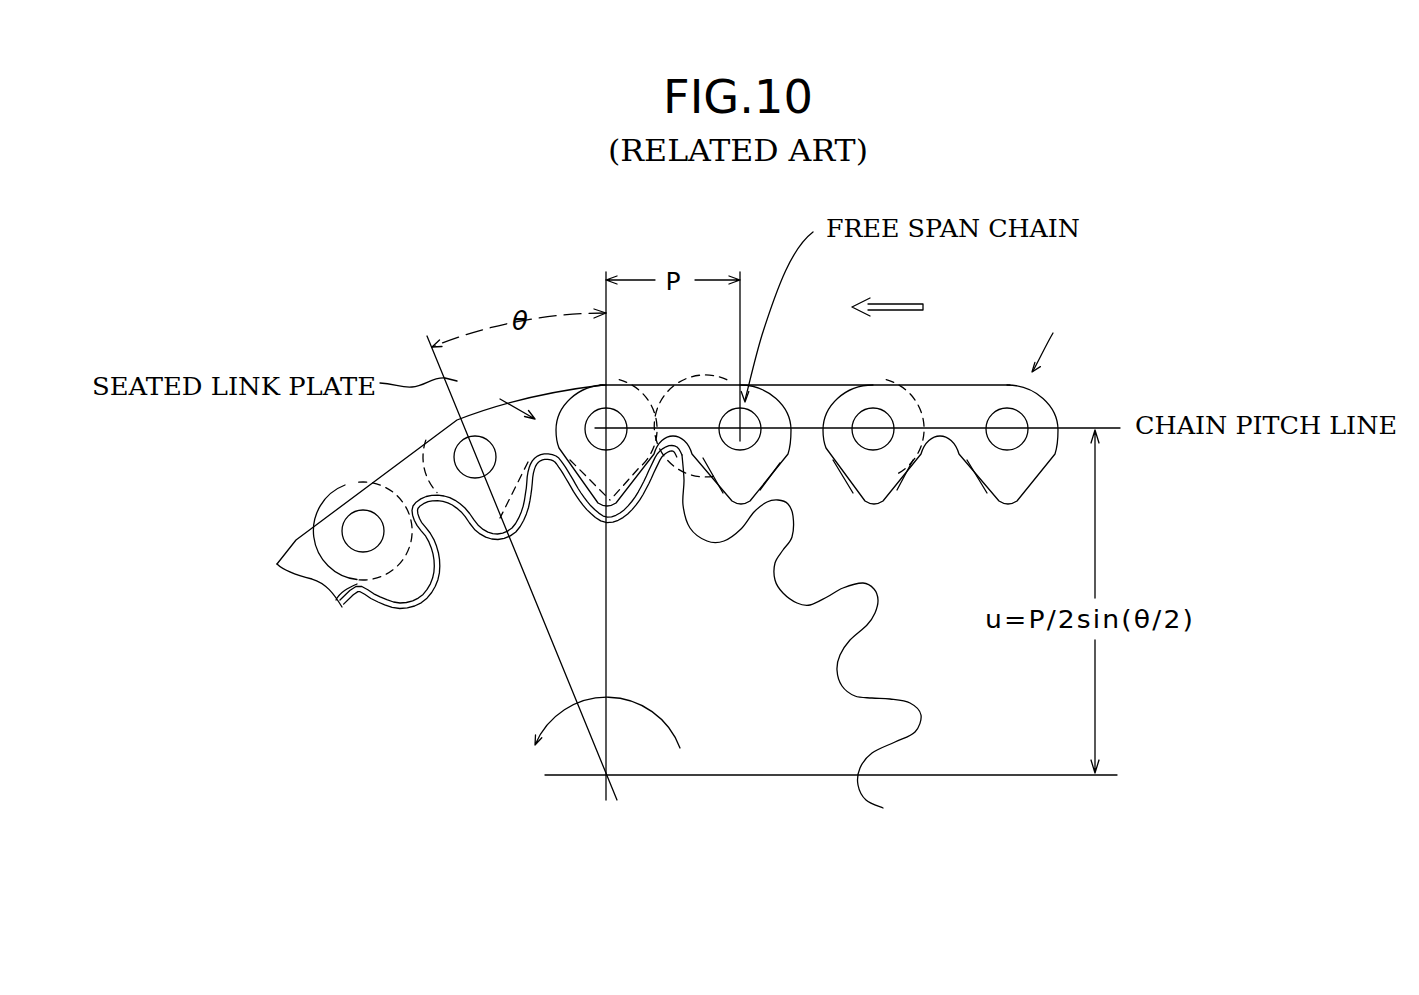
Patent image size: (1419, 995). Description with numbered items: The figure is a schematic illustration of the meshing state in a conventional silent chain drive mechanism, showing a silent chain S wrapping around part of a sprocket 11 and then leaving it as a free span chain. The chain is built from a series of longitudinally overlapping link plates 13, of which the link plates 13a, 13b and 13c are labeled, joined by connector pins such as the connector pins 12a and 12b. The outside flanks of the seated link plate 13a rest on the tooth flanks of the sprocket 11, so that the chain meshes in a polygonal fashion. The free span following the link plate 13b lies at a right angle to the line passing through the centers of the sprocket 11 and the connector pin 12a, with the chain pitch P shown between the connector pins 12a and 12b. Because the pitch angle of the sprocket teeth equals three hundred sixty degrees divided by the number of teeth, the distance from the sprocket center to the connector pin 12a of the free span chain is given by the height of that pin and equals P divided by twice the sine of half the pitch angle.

The sprocket 11 is at (755, 690).
The connector pin 12a is at (616, 413).
The connector pin 12b is at (751, 421).
The link plate 13 is at (932, 375).
The link plate 13a is at (548, 394).
The link plate 13b is at (682, 400).
The link plate 13c is at (809, 401).
The silent chain S is at (1054, 338).